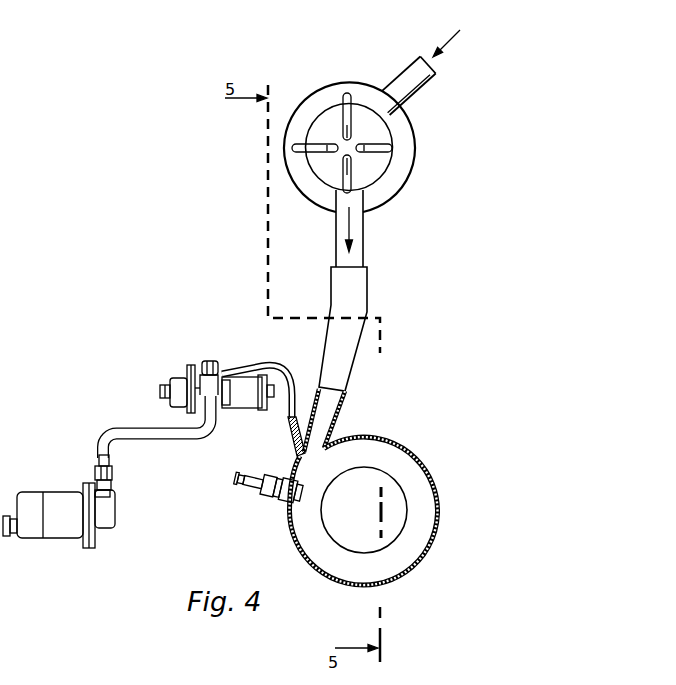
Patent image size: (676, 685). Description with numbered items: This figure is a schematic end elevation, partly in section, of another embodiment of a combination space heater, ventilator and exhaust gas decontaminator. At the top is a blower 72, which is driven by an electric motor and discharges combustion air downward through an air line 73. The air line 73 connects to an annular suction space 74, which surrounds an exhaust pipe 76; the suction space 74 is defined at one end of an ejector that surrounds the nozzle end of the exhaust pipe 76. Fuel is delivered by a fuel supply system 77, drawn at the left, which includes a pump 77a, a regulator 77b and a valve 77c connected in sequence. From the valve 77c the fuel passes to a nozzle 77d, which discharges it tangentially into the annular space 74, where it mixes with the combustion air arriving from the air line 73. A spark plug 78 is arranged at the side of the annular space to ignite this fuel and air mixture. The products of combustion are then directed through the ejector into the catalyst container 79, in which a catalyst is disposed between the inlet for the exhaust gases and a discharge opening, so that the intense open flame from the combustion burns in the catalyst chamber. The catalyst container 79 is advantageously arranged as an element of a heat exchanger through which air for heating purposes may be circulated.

The blower 72 is at (308, 95).
The air line 73 is at (363, 243).
The annular suction space 74 is at (385, 492).
The exhaust pipe 76 is at (398, 483).
The fuel supply system 77 is at (204, 372).
The pump 77a is at (58, 500).
The regulator 77b is at (173, 380).
The valve 77c is at (262, 390).
The nozzle 77d is at (292, 437).
The spark plug 78 is at (265, 498).
The catalyst container 79 is at (440, 532).